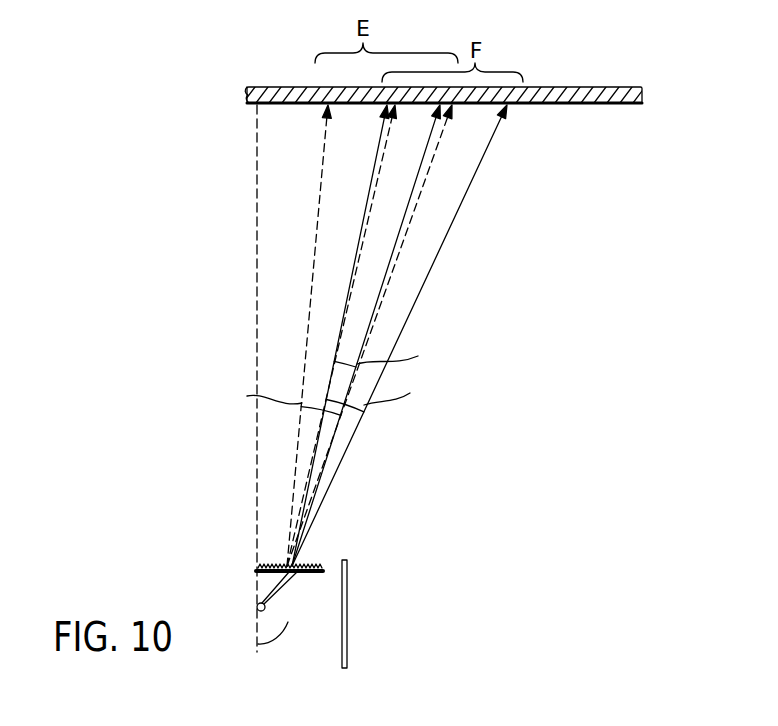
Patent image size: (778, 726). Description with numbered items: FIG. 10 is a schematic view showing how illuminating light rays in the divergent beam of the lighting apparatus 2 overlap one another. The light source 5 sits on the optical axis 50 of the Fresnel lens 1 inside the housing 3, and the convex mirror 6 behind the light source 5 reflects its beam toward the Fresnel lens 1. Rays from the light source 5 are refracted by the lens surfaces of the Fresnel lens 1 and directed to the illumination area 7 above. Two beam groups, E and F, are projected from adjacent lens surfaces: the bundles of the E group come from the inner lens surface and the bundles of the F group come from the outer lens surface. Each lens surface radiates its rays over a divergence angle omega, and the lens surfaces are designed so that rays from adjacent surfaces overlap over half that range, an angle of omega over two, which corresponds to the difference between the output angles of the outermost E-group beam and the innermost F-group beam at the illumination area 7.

The Fresnel lens 1 is at (308, 563).
The lighting apparatus 2 is at (428, 458).
The housing 3 is at (347, 575).
The light source 5 is at (265, 606).
The convex mirror 6 is at (277, 636).
The illumination area 7 is at (585, 87).
The optical axis 50 is at (255, 241).